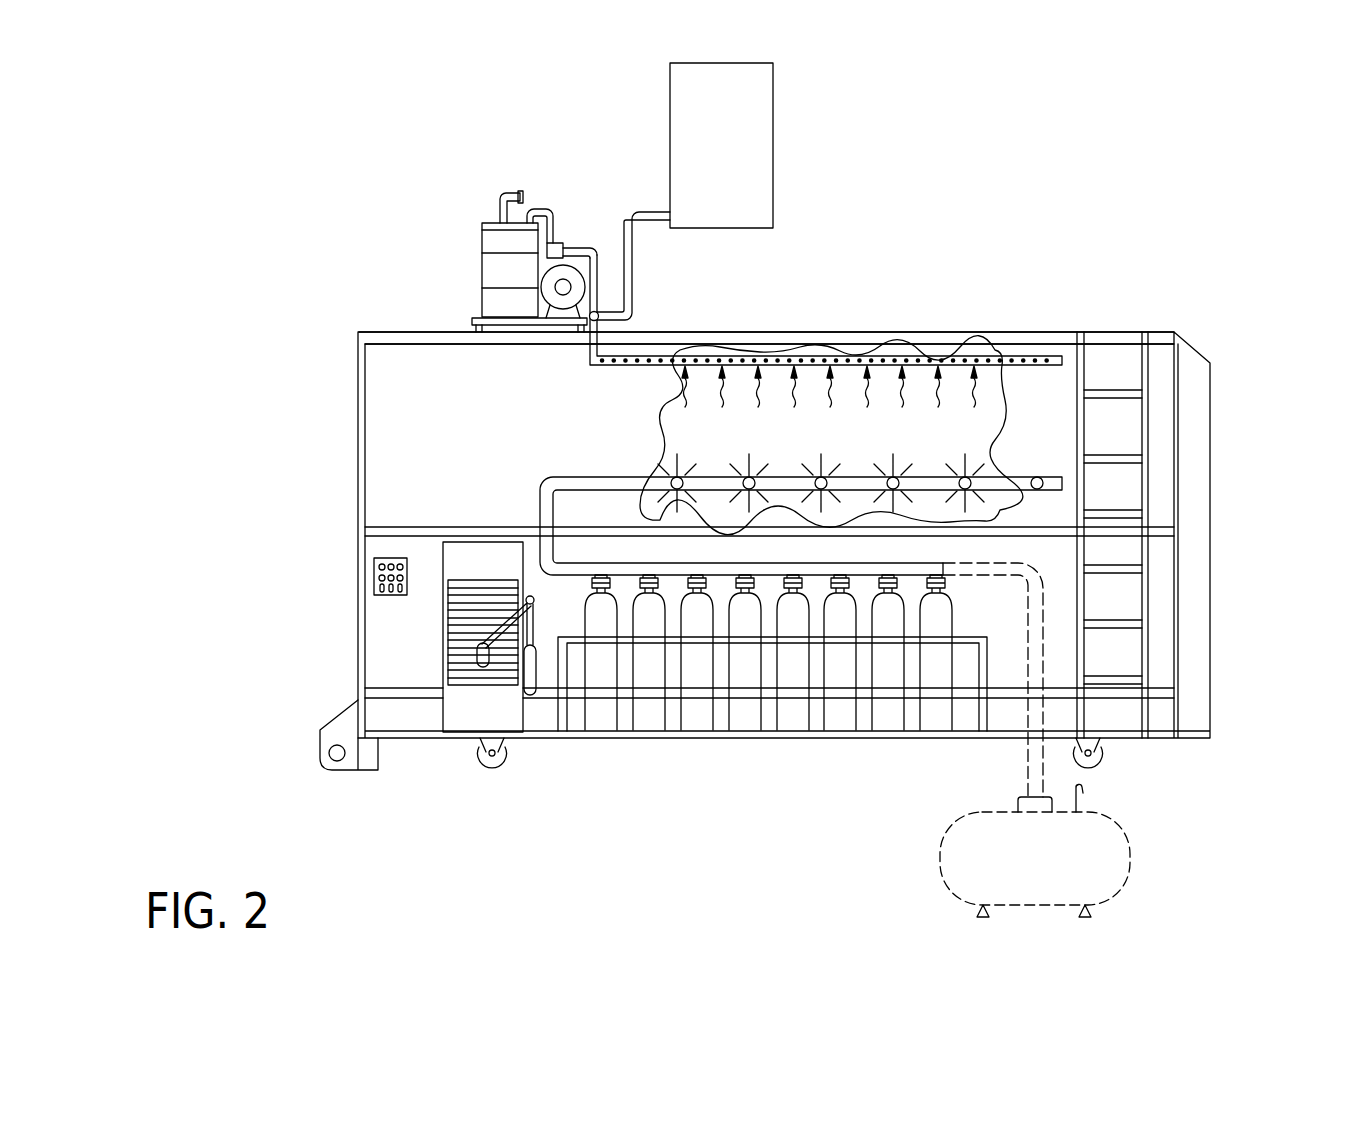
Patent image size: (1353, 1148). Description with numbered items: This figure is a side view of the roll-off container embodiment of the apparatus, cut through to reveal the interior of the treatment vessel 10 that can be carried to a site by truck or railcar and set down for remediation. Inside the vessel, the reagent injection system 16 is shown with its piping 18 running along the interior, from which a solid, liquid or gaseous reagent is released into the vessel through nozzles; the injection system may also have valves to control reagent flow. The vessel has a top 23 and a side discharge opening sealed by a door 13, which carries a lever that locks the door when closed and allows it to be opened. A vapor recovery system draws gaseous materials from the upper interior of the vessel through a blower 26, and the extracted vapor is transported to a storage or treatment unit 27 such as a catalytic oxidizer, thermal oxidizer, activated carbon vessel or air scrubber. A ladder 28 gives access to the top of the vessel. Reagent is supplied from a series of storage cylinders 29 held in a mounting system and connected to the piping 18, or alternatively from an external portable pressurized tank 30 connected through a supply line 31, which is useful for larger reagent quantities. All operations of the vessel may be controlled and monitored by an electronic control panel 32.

The mobile thermal desorption apparatus / container 10 is at (358, 470).
The access door 13 is at (465, 712).
The reagent injection system 16 is at (545, 478).
The piping 18 is at (598, 364).
The top wall / roof 23 is at (390, 341).
The blower unit 26 is at (563, 236).
The control unit 27 is at (773, 165).
The ladder 28 is at (1195, 561).
The gas cylinders 29 is at (697, 720).
The fuel tank 30 is at (955, 864).
The fuel supply pipe 31 is at (1033, 761).
The control panel 32 is at (382, 596).